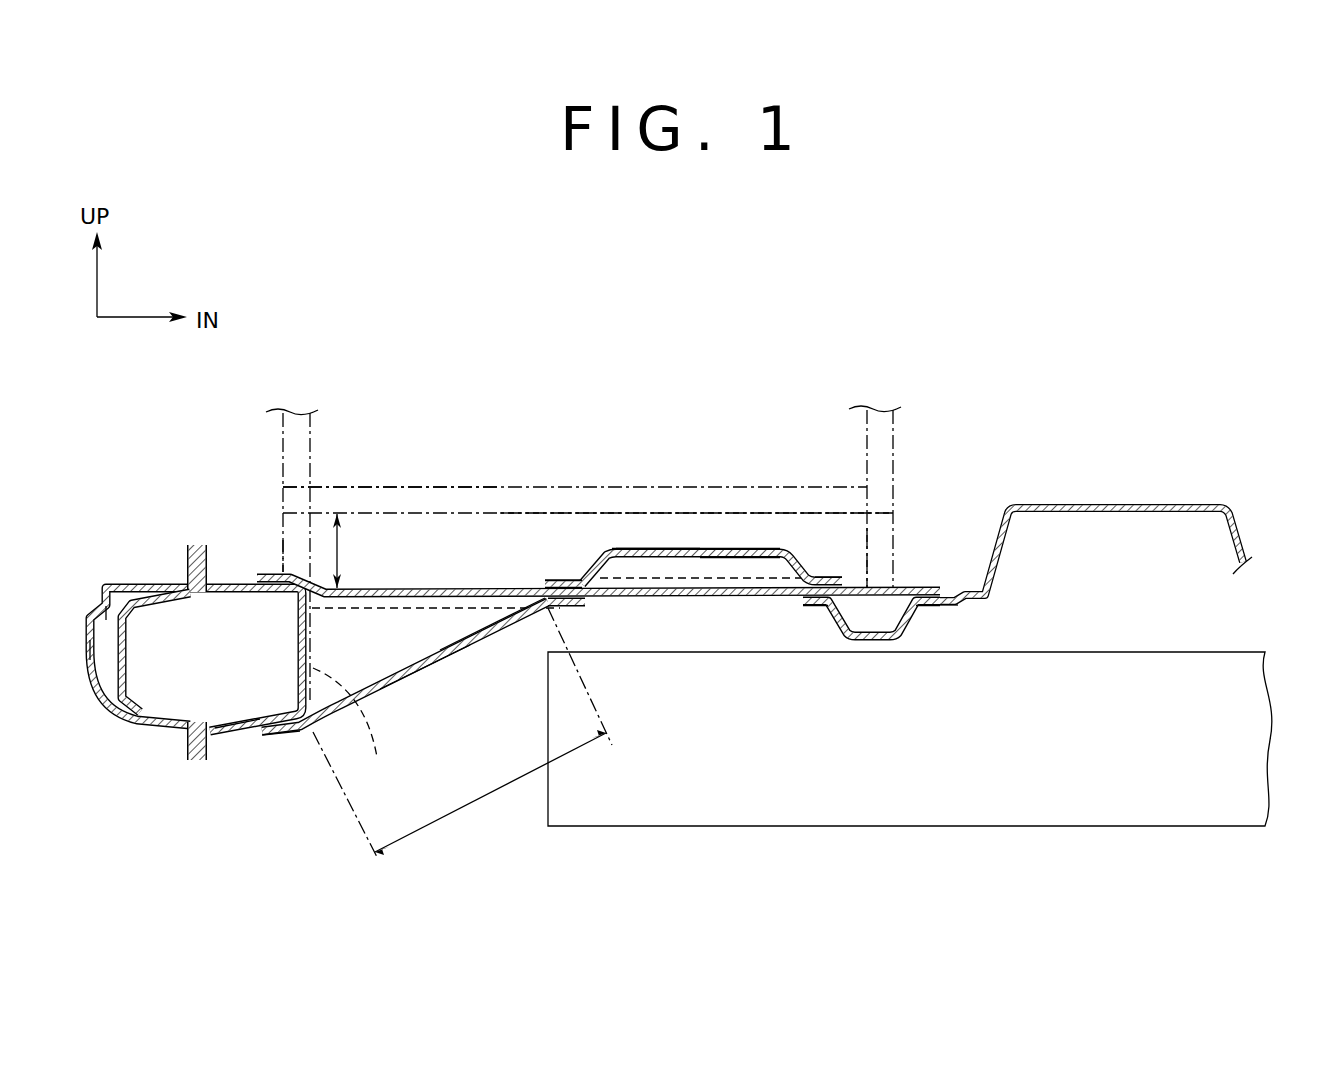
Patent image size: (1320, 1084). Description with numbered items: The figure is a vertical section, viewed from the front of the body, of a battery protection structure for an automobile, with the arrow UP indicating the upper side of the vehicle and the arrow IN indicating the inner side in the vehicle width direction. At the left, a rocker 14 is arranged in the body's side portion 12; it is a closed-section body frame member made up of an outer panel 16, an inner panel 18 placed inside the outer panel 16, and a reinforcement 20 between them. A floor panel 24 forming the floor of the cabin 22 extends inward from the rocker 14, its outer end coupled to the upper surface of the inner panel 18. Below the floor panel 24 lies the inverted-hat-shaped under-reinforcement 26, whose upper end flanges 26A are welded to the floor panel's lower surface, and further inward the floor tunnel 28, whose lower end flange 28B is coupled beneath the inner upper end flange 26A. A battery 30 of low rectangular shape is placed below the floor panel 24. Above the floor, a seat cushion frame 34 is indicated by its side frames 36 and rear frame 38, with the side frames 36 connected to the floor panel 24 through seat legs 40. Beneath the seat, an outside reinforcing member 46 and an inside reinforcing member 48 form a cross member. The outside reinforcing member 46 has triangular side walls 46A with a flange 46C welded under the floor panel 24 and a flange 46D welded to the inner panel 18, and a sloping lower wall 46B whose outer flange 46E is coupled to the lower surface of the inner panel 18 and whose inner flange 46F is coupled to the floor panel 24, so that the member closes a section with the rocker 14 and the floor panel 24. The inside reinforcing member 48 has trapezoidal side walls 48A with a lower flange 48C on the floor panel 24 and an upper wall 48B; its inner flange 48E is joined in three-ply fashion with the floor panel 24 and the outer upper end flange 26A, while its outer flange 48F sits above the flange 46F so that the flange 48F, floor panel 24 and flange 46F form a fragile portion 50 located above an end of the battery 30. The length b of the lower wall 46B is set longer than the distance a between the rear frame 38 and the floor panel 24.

The body's side portion 12 is at (249, 816).
The rocker 14 is at (158, 583).
The outer panel 16 is at (125, 734).
The inner panel 18 is at (240, 734).
The reinforcement 20 is at (128, 655).
The cabin 22 is at (682, 301).
The floor panel 24 is at (483, 588).
The under-reinforcement 26 is at (868, 641).
The upper end flange 26A is at (812, 607).
The floor tunnel 28 is at (1120, 504).
The lower end flange 28B is at (968, 612).
The battery 30 is at (1067, 827).
The seat cushion frame 34 is at (380, 488).
The side frame 36 is at (283, 428).
The rear frame 38 is at (440, 486).
The seat leg 40 is at (283, 541).
The outside reinforcing member 46 is at (405, 681).
The side wall 46A is at (443, 617).
The lower wall 46B is at (460, 653).
The flange 46C is at (378, 604).
The flange 46D is at (361, 729).
The flange 46E is at (283, 737).
The flange 46F is at (566, 607).
The inside reinforcing member 48 is at (710, 549).
The side wall 48A is at (755, 560).
The upper wall 48B is at (648, 548).
The flange 48C is at (690, 599).
The flange 48E is at (822, 577).
The flange 48F is at (562, 579).
The fragile portion 50 is at (556, 579).
The distance a is at (345, 550).
The length dimension b is at (482, 808).